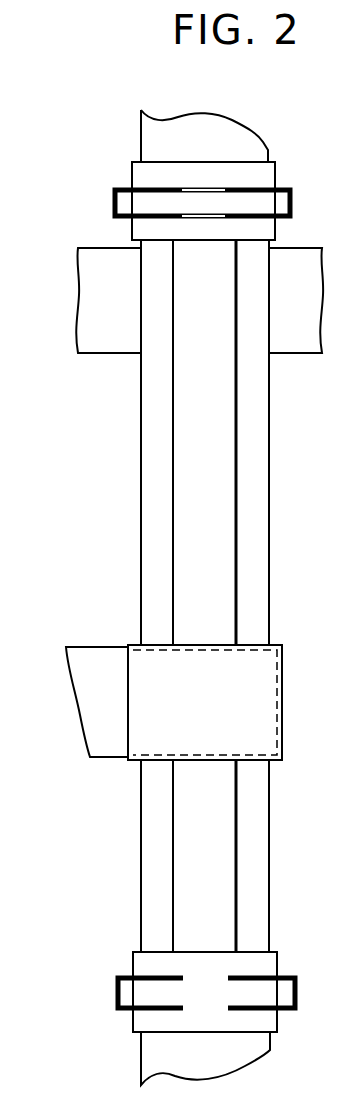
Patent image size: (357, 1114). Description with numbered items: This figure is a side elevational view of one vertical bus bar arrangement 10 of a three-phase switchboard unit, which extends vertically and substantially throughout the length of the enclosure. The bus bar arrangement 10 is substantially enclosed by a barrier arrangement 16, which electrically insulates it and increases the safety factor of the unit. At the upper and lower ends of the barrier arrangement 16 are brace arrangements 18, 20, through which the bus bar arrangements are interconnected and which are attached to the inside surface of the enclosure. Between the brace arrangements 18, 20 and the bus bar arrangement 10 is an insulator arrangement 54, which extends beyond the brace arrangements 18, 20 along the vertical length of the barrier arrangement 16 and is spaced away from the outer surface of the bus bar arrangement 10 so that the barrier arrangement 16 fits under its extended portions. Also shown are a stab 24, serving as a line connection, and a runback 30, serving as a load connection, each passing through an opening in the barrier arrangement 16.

The bus bar arrangement 10 is at (228, 120).
The barrier arrangement 16 is at (125, 532).
The brace arrangement 18 is at (98, 188).
The brace arrangement 20 is at (122, 965).
The stab 24 is at (102, 747).
The runback 30 is at (120, 345).
The insulator arrangement 54 is at (270, 173).